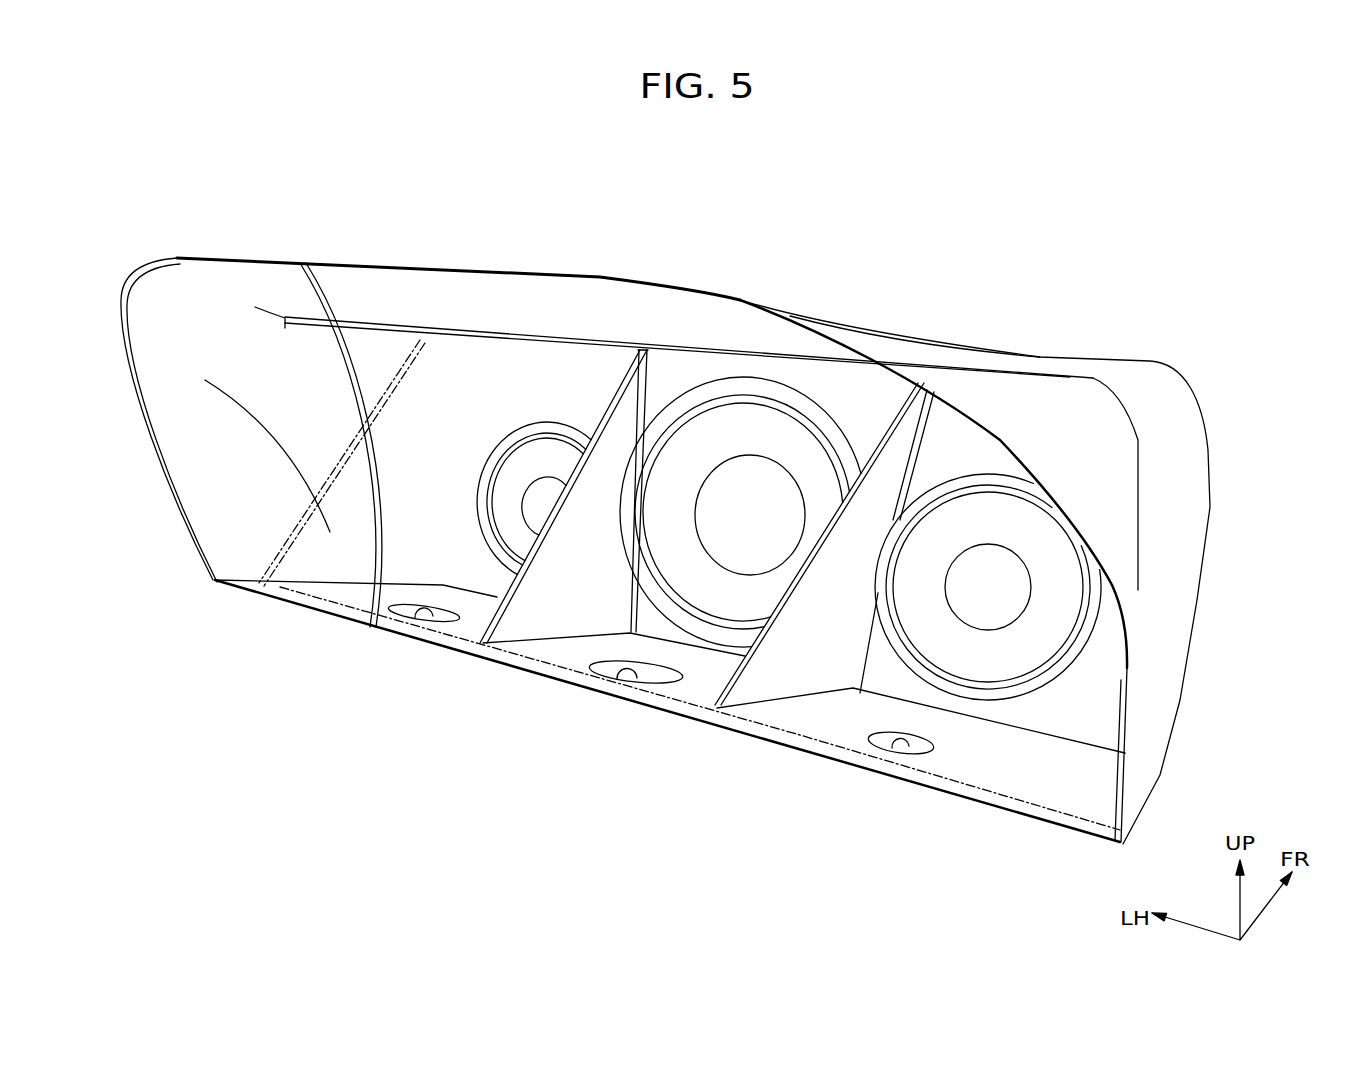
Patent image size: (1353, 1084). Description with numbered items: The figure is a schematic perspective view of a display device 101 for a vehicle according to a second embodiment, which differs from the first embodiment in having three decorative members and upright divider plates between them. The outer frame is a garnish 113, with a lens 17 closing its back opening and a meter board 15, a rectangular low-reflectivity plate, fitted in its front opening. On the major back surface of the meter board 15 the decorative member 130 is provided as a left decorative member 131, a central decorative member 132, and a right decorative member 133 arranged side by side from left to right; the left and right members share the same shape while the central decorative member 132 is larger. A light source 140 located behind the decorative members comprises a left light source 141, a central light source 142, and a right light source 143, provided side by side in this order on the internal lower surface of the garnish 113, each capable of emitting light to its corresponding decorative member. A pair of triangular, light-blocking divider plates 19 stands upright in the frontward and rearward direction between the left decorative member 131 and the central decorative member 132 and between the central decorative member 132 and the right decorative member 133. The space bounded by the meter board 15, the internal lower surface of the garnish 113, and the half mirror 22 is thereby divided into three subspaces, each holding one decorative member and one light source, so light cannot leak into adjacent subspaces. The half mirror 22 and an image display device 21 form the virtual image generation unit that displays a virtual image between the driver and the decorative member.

The display device for a vehicle 101 is at (148, 212).
The meter board 15 is at (670, 373).
The lens 17 is at (222, 295).
The divider plate 19 is at (527, 633).
The image display device 21 is at (537, 357).
The half mirror 22 is at (393, 367).
The garnish 113 is at (1000, 383).
The decorative member 130 is at (815, 446).
The left decorative member 131 is at (500, 435).
The central decorative member 132 is at (745, 385).
The right decorative member 133 is at (1038, 500).
The light source 140 is at (666, 738).
The left light source 141 is at (427, 617).
The central light source 142 is at (618, 677).
The right light source 143 is at (900, 747).